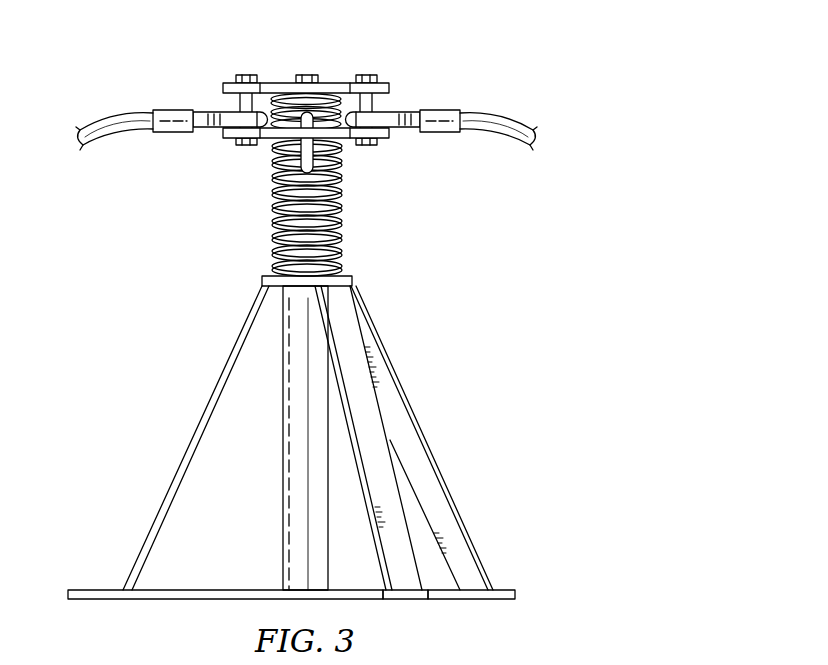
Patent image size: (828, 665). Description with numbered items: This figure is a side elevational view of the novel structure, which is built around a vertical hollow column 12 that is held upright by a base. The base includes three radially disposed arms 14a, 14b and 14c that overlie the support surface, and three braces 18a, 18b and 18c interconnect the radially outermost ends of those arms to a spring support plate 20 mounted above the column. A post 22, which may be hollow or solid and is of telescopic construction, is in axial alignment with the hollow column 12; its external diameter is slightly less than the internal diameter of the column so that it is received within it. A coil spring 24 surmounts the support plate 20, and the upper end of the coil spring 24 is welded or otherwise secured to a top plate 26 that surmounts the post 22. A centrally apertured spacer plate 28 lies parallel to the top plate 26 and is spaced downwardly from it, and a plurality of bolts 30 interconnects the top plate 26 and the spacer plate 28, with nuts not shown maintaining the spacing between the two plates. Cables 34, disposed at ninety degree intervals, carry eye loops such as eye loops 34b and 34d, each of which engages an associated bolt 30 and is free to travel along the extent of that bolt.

The vertical hollow column 12 is at (298, 456).
The radially disposed arm 14a is at (210, 590).
The radially disposed arm 14b is at (482, 593).
The radially disposed arm 14c is at (405, 594).
The brace 18a is at (190, 437).
The brace 18b is at (422, 432).
The brace 18c is at (423, 573).
The spring support plate 20 is at (265, 277).
The post 22 is at (276, 190).
The coil spring 24 is at (343, 205).
The top plate 26 is at (334, 84).
The centrally apertured spacer plate 28 is at (343, 136).
The bolts 30 is at (408, 50).
The cables 34 is at (90, 132).
The eye loop 34b is at (195, 110).
The eye loop 34d is at (418, 110).